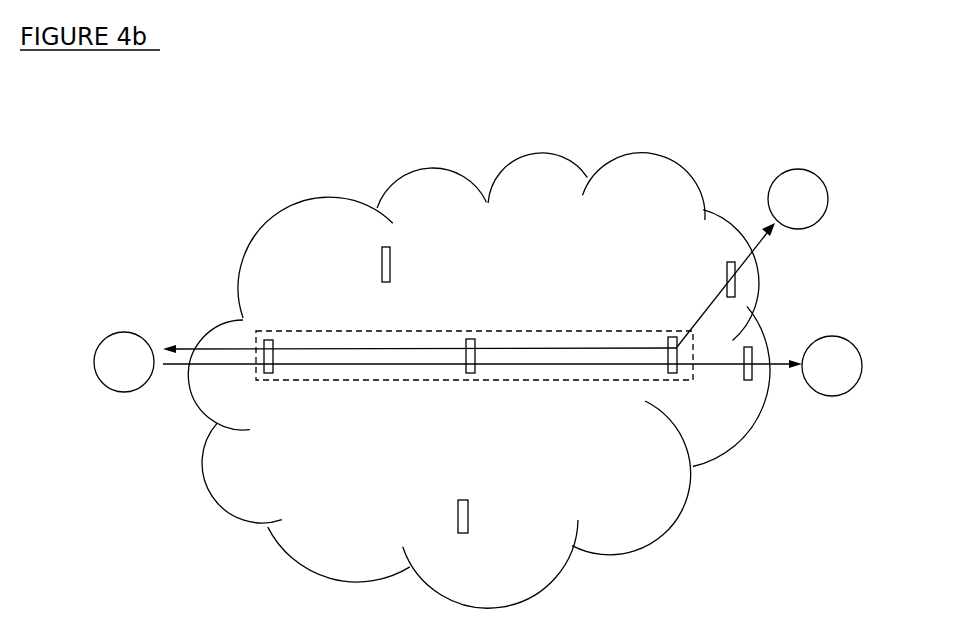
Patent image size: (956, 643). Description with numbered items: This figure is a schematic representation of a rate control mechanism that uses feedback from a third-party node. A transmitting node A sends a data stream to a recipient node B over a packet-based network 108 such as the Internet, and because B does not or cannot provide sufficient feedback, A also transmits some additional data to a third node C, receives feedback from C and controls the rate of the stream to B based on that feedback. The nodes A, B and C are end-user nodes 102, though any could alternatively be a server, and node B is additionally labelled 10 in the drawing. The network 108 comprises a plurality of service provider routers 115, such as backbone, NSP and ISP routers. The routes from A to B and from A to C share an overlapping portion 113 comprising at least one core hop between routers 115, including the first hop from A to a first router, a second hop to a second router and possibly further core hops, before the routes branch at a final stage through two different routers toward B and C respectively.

The packet-based network 108 is at (687, 165).
The end-user node 102 is at (127, 332).
The node B 10 is at (845, 338).
The shared portion of routes 113 is at (492, 331).
The service provider router 115 is at (390, 263).